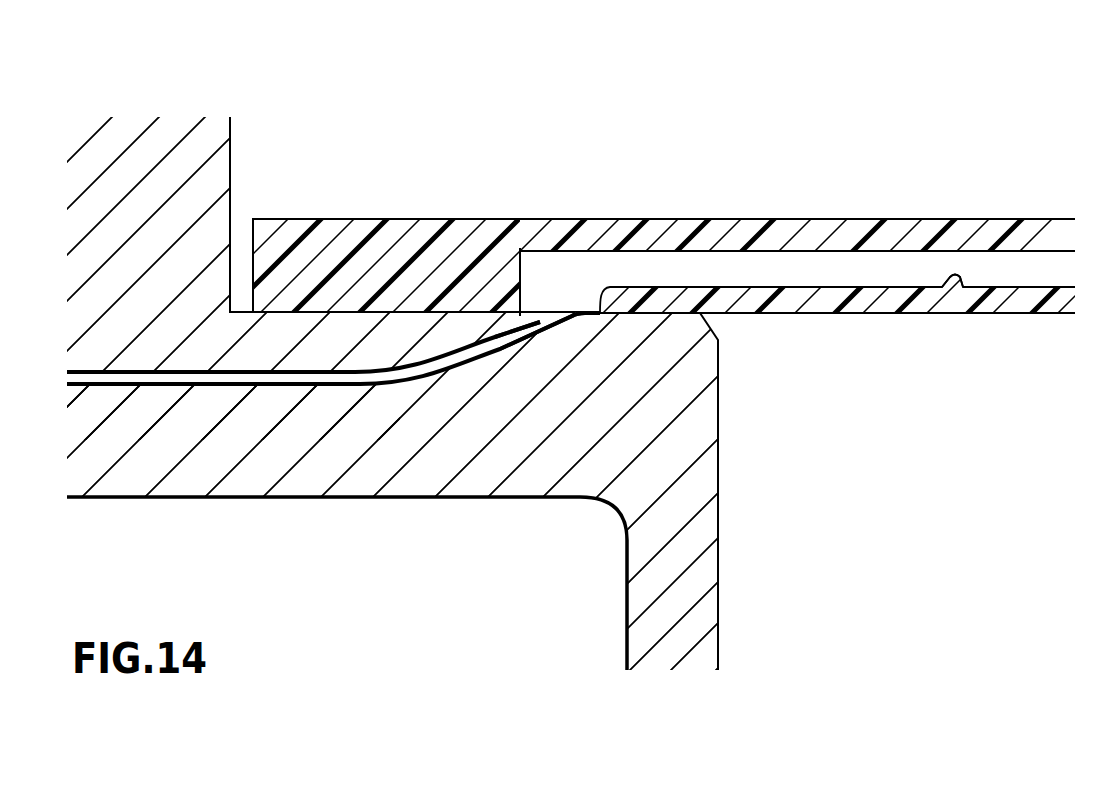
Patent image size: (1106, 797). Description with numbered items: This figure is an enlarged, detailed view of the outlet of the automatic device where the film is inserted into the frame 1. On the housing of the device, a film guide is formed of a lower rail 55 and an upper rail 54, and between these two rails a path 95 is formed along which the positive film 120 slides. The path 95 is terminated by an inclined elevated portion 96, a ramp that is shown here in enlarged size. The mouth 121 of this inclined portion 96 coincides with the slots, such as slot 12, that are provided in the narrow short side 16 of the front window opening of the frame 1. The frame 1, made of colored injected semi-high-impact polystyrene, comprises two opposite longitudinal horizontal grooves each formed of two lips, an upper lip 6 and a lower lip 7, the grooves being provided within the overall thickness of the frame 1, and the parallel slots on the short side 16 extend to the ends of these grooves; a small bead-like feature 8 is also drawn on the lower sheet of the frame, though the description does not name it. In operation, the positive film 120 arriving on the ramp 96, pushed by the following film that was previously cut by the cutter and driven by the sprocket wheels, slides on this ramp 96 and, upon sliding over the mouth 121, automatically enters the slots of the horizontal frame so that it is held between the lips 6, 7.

The upper rail 54 is at (126, 177).
The lower rail 55 is at (136, 400).
The path 95 is at (225, 387).
The positive film 120 is at (400, 380).
The inclined elevated portion 96 is at (500, 349).
The mouth 121 is at (573, 313).
The frame 1 is at (452, 250).
The lower lip 7 is at (851, 232).
The short side 16 is at (521, 310).
The slot 12 is at (573, 262).
The upper lip 6 is at (862, 298).
The bead 8 is at (955, 277).